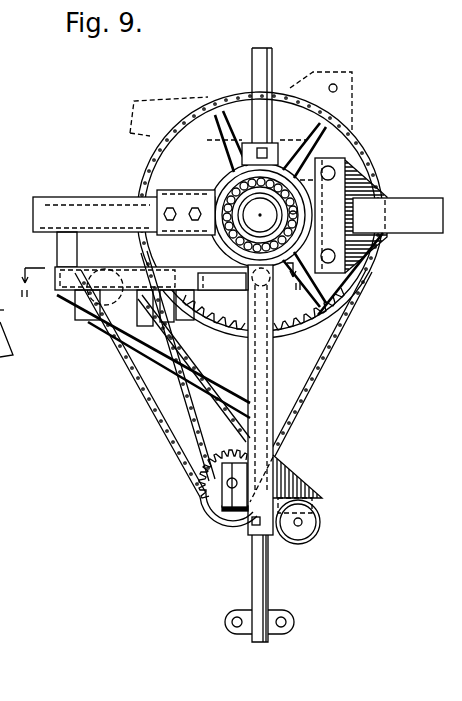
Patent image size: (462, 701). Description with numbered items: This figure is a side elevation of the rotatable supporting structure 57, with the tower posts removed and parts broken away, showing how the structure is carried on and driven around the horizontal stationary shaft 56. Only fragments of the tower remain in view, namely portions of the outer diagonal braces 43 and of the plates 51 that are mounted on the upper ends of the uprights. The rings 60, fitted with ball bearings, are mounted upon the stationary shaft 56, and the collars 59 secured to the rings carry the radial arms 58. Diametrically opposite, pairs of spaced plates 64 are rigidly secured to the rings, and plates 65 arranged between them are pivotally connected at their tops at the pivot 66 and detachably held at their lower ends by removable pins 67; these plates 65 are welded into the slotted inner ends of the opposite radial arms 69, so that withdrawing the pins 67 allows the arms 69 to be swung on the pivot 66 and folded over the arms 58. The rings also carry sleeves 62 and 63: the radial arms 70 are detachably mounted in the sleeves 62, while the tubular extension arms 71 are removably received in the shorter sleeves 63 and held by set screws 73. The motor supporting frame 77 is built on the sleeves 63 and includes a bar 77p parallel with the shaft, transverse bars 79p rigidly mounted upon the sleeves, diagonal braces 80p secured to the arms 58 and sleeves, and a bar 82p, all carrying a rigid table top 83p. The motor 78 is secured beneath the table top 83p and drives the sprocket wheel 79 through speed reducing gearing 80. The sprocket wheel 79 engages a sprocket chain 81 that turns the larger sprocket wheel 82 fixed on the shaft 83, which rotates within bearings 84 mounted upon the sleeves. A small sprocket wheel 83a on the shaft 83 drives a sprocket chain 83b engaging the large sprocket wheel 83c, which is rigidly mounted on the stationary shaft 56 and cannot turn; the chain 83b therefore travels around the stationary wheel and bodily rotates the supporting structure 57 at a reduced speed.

The outer diagonal braces 43 is at (12, 346).
The plates 51 is at (12, 315).
The stationary shaft 56 is at (240, 192).
The rotatable supporting structure 57 is at (211, 178).
The radial arms 58 is at (55, 198).
The collars 59 is at (150, 183).
The rings 60 is at (304, 224).
The sleeves 62 is at (252, 145).
The sleeves 63 is at (278, 390).
The pairs of spaced plates 64 is at (332, 302).
The plates 65 is at (376, 262).
The pivotal connection 66 is at (337, 173).
The removable pins 67 is at (352, 277).
The radial arms 69 is at (371, 210).
The radial arms 70 is at (273, 60).
The extension arms 71 is at (277, 592).
The set screws 73 is at (270, 540).
The motor supporting frame 77 is at (66, 302).
The bar 77p is at (284, 338).
The motor 78 is at (58, 299).
The sprocket wheel 79 is at (118, 347).
The transverse bars 79p is at (242, 322).
The speed reducing gearing 80 is at (92, 325).
The diagonal braces 80p is at (60, 248).
The sprocket chain 81 is at (165, 434).
The larger sprocket wheel 82 is at (207, 470).
The bar 82p is at (222, 282).
The shaft 83 is at (226, 490).
The table top 83p is at (88, 266).
The small sprocket wheel 83a is at (228, 484).
The sprocket chain 83b is at (301, 408).
The large sprocket wheel 83c is at (342, 334).
The bearings 84 is at (238, 512).